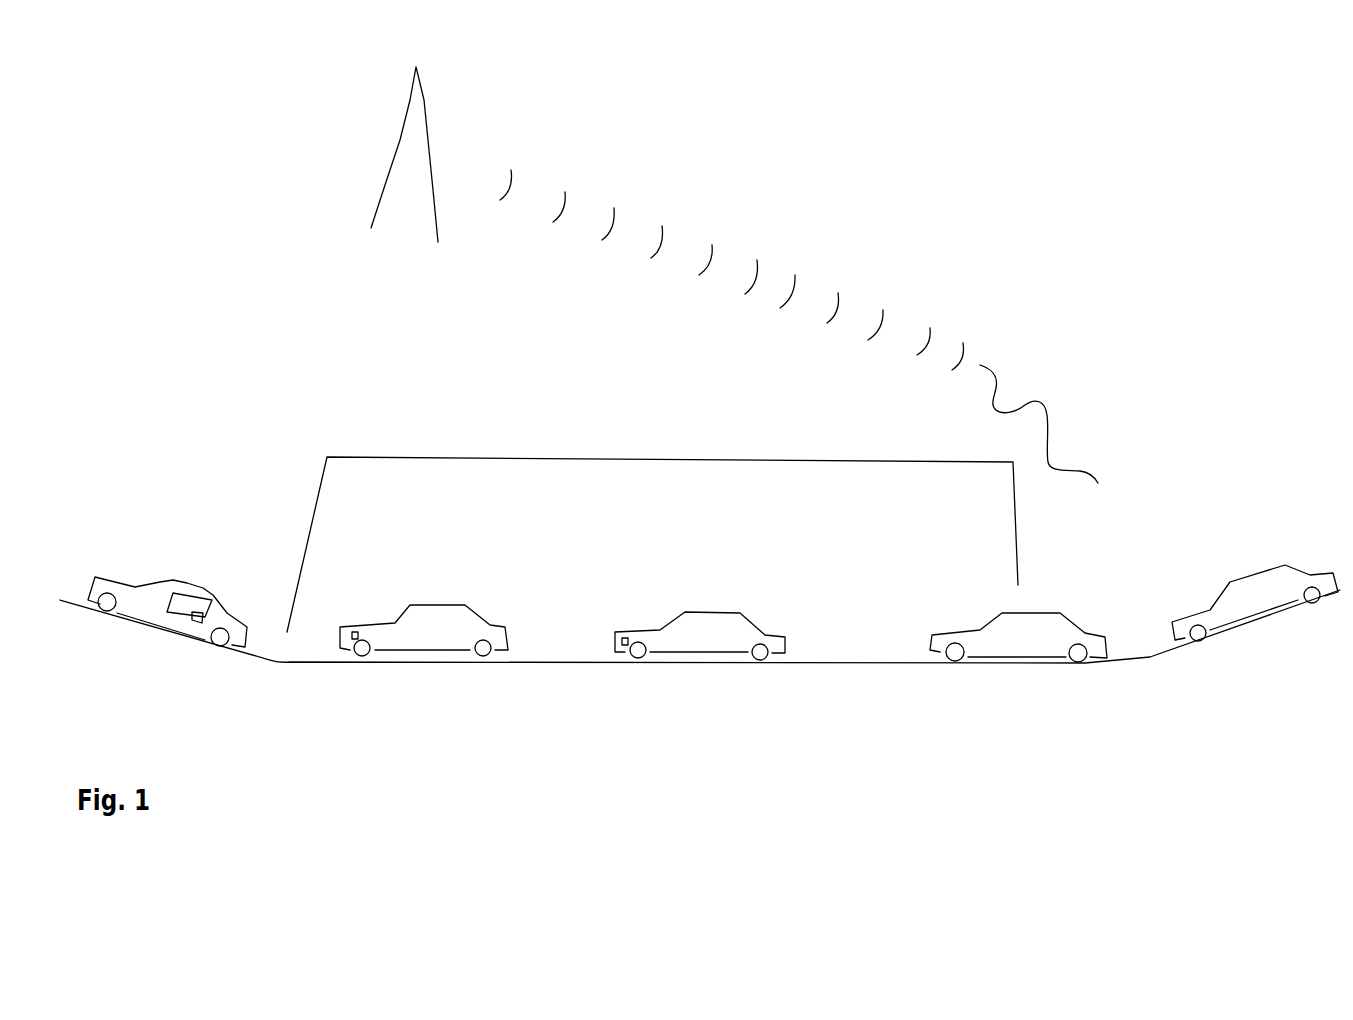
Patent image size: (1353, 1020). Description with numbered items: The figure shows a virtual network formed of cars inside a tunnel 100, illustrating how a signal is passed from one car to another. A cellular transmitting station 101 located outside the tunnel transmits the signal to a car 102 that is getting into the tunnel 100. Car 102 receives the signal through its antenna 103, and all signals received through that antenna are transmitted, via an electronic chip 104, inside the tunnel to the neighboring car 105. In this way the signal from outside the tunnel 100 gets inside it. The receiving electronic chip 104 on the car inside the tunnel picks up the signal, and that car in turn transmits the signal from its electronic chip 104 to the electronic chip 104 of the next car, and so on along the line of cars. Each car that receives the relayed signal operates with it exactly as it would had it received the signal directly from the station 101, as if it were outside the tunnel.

The tunnel 100 is at (480, 455).
The cellular transmitting station 101 is at (440, 100).
The car 102 is at (172, 580).
The antenna 103 is at (230, 578).
The electronic chip 104 is at (222, 580).
The car 105 is at (422, 600).